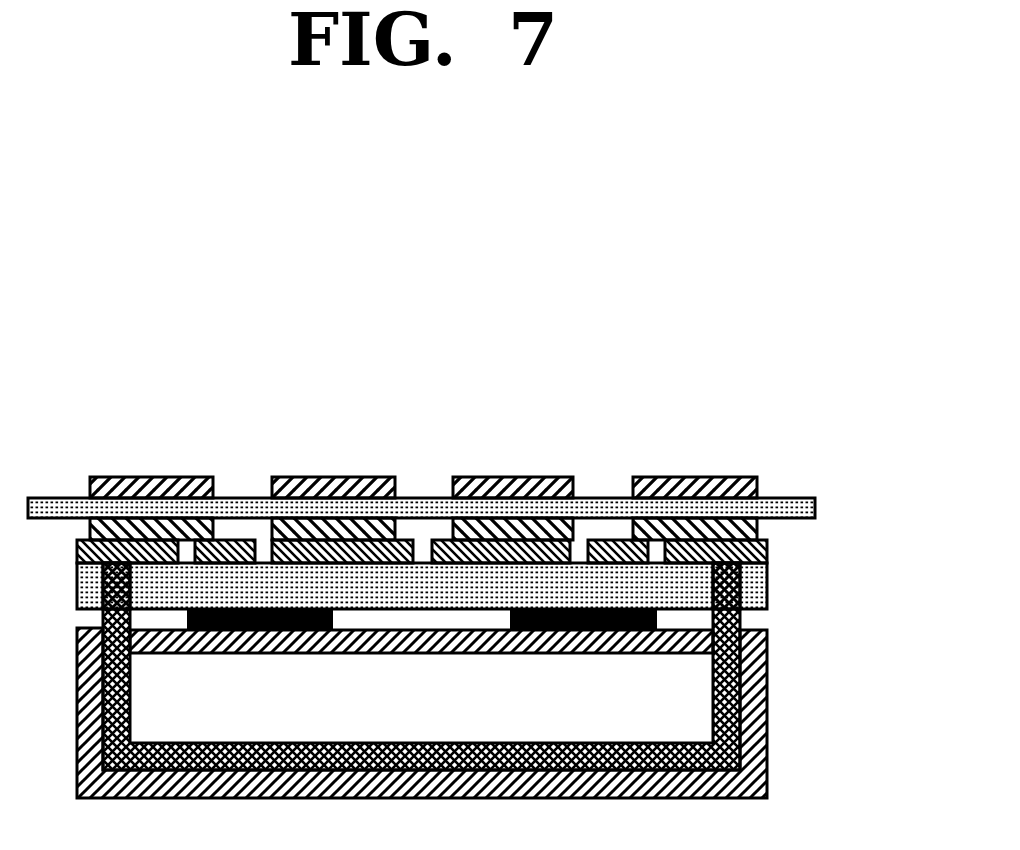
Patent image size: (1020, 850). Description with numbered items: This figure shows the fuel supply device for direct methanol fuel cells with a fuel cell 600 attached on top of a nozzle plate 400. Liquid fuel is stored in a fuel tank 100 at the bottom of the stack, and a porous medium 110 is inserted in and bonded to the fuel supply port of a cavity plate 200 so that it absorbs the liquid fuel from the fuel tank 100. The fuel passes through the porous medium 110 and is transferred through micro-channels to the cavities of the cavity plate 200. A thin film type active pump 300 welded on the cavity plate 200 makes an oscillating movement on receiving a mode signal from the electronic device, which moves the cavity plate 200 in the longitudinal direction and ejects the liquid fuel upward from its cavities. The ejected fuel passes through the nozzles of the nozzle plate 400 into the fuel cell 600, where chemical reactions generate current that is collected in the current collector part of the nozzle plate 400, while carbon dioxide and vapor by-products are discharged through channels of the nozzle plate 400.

The fuel tank 100 is at (767, 745).
The porous medium 110 is at (720, 690).
The cavity plate 200 is at (767, 588).
The thin film type active pump 300 is at (657, 617).
The nozzle plate 400 is at (767, 548).
The fuel cell 600 is at (815, 510).